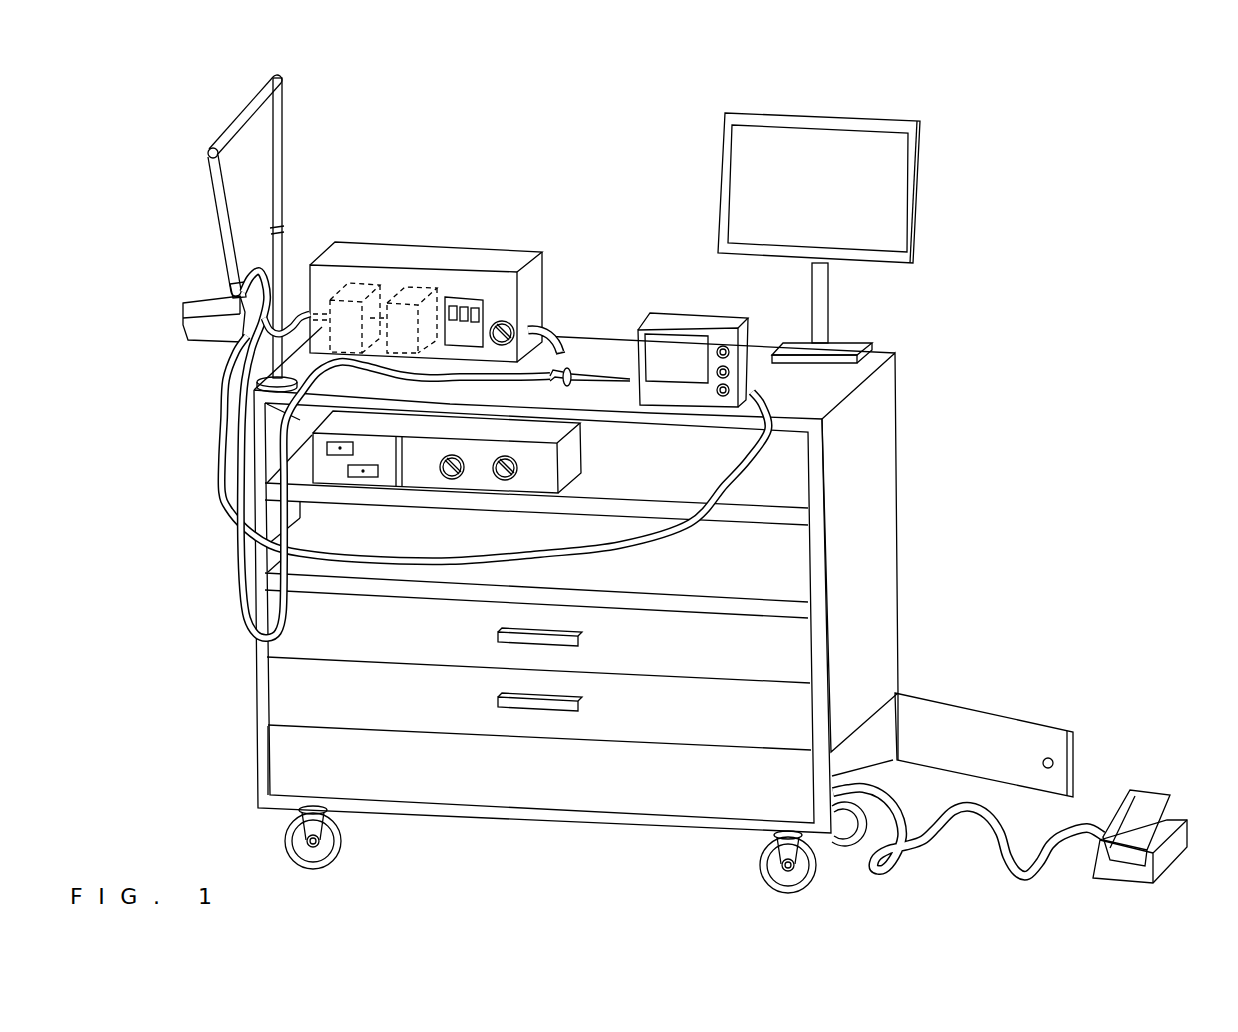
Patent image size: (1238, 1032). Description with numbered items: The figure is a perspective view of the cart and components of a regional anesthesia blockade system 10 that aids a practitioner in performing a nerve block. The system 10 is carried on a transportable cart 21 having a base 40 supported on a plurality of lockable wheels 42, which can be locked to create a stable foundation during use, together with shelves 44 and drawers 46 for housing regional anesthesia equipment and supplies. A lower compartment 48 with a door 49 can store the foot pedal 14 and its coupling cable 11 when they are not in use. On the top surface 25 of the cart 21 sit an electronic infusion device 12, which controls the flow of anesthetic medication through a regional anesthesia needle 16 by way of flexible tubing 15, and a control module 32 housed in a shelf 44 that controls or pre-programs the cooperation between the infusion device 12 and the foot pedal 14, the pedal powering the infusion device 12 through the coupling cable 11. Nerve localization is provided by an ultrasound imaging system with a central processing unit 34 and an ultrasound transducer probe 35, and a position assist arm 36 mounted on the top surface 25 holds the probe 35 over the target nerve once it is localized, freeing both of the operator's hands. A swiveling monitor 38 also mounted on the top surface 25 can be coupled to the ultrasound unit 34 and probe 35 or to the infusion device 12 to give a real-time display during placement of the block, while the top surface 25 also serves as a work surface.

The regional anesthesia blockade system 10 is at (157, 93).
The coupling cable 11 is at (553, 335).
The electronic infusion device 12 is at (432, 255).
The foot pedal 14 is at (1147, 795).
The flexible tubing 15 is at (240, 553).
The regional anesthesia needle 16 is at (617, 372).
The cart 21 is at (210, 398).
The top surface 25 is at (848, 381).
The control module 32 is at (310, 458).
The central processing unit 34 is at (697, 321).
The ultrasound transducer probe 35 is at (203, 303).
The position assist arm 36 is at (225, 128).
The monitor 38 is at (833, 200).
The base 40 is at (535, 817).
The lockable wheels 42 is at (283, 845).
The shelves 44 is at (740, 513).
The drawers 46 is at (290, 648).
The lower compartment 48 is at (290, 750).
The door 49 is at (987, 713).